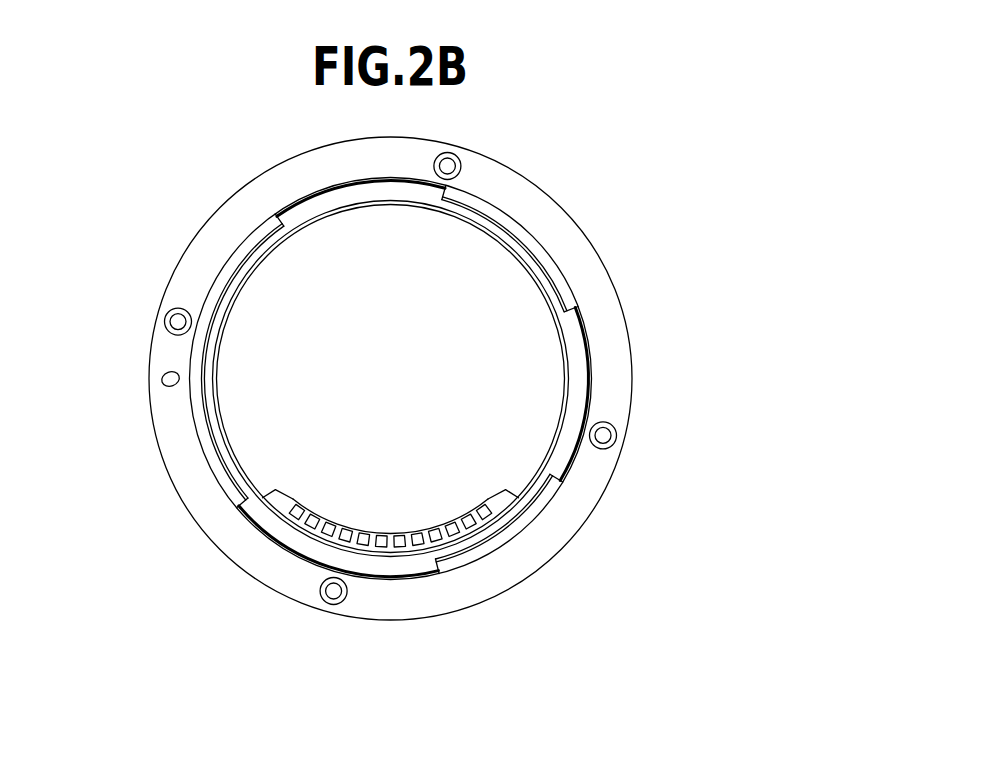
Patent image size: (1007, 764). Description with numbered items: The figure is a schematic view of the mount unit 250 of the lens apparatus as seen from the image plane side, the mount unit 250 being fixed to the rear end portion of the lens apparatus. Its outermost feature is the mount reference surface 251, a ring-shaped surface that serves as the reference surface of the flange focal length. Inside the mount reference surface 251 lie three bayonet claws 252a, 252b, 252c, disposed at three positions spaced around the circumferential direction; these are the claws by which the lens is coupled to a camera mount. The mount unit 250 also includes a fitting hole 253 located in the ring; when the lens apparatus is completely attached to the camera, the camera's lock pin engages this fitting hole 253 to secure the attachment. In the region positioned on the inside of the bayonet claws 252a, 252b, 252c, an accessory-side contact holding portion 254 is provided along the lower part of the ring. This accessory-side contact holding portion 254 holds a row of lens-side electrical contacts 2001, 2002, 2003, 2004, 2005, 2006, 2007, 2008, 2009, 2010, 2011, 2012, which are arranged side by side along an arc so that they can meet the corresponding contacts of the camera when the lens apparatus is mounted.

The mount unit 250 is at (189, 168).
The mount reference surface 251 is at (523, 211).
The bayonet claw 252a is at (587, 366).
The bayonet claw 252b is at (345, 197).
The bayonet claw 252c is at (358, 552).
The fitting hole 253 is at (168, 380).
The accessory-side contact holding portion 254 is at (500, 500).
The electrical contact 2001 is at (488, 518).
The electrical contact 2002 is at (472, 528).
The electrical contact 2003 is at (455, 536).
The electrical contact 2004 is at (437, 542).
The electrical contact 2005 is at (419, 546).
The electrical contact 2006 is at (400, 548).
The electrical contact 2007 is at (381, 548).
The electrical contact 2008 is at (362, 546).
The electrical contact 2009 is at (344, 542).
The electrical contact 2010 is at (326, 536).
The electrical contact 2011 is at (309, 528).
The electrical contact 2012 is at (293, 518).